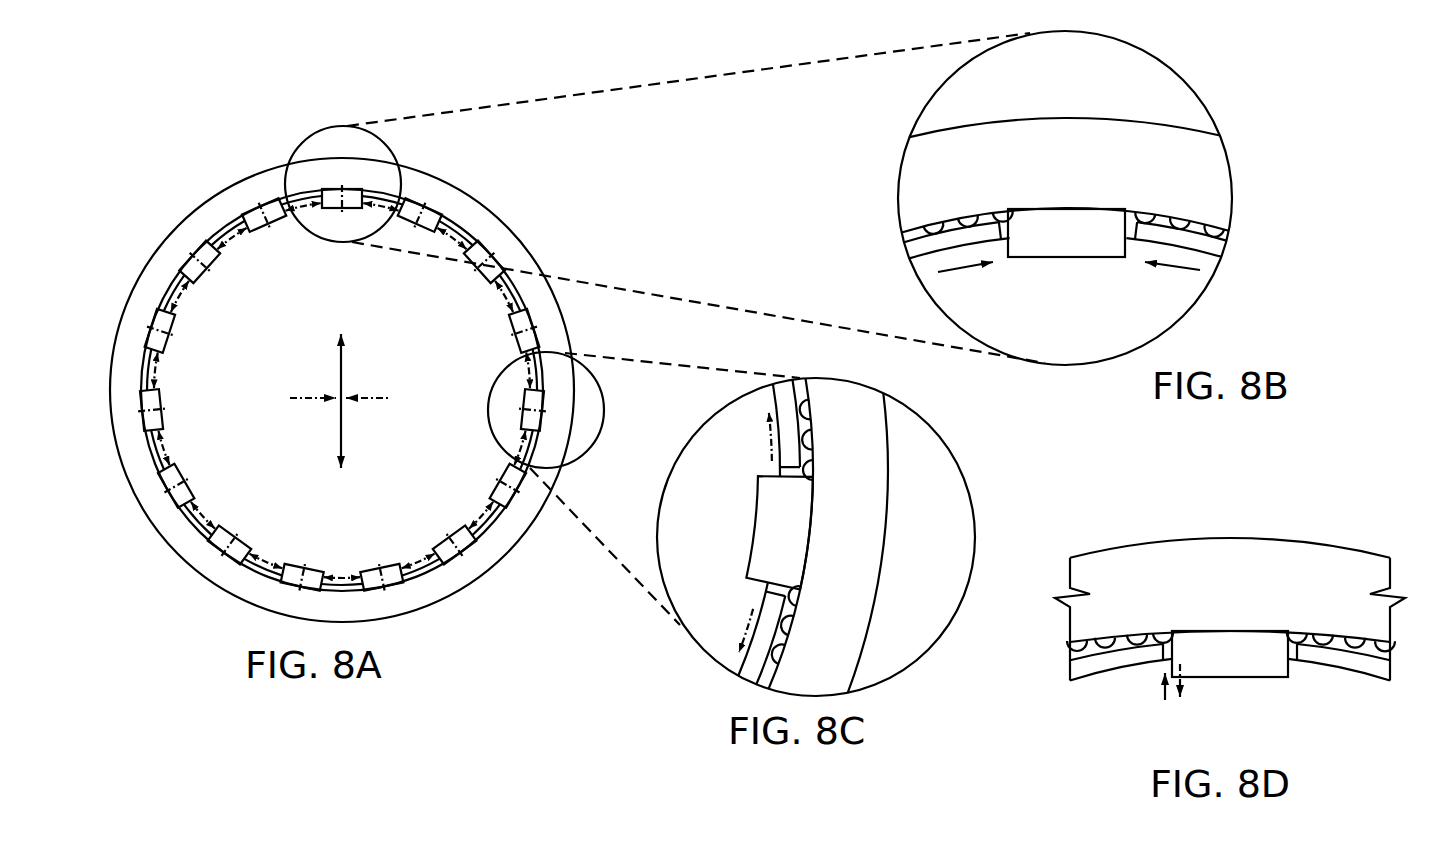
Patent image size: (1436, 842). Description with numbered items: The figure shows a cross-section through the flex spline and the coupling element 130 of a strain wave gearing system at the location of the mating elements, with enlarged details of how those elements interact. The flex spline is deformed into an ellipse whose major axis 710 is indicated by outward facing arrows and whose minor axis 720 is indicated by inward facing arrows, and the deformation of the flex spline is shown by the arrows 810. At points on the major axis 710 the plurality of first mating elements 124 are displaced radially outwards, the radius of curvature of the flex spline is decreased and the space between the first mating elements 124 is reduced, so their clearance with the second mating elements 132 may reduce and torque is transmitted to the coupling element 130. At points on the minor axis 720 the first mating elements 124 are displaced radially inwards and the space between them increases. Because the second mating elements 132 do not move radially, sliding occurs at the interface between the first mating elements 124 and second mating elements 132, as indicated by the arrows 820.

In FIG. 8A, the coupling element 130 is at (124, 379).
In FIG. 8B, the coupling element 130 is at (1113, 158).
In FIG. 8C, the coupling element 130 is at (860, 528).
In FIG. 8D, the coupling element 130 is at (1127, 607).
In FIG. 8A, the second mating elements 132 is at (190, 258).
In FIG. 8B, the second mating elements 132 is at (1065, 233).
In FIG. 8C, the second mating elements 132 is at (790, 527).
In FIG. 8D, the second mating elements 132 is at (1243, 660).
In FIG. 8A, the first mating elements 124 is at (175, 295).
In FIG. 8B, the first mating elements 124 is at (1170, 238).
In FIG. 8C, the first mating elements 124 is at (777, 610).
In FIG. 8D, the first mating elements 124 is at (1338, 663).
In FIG. 8A, the major axis 710 is at (347, 376).
In FIG. 8A, the minor axis 720 is at (380, 402).
In FIG. 8A, the arrows 810 is at (153, 443).
In FIG. 8B, the arrows 810 is at (1170, 265).
In FIG. 8C, the arrows 810 is at (745, 640).
In FIG. 8D, the arrows 820 is at (1164, 700).